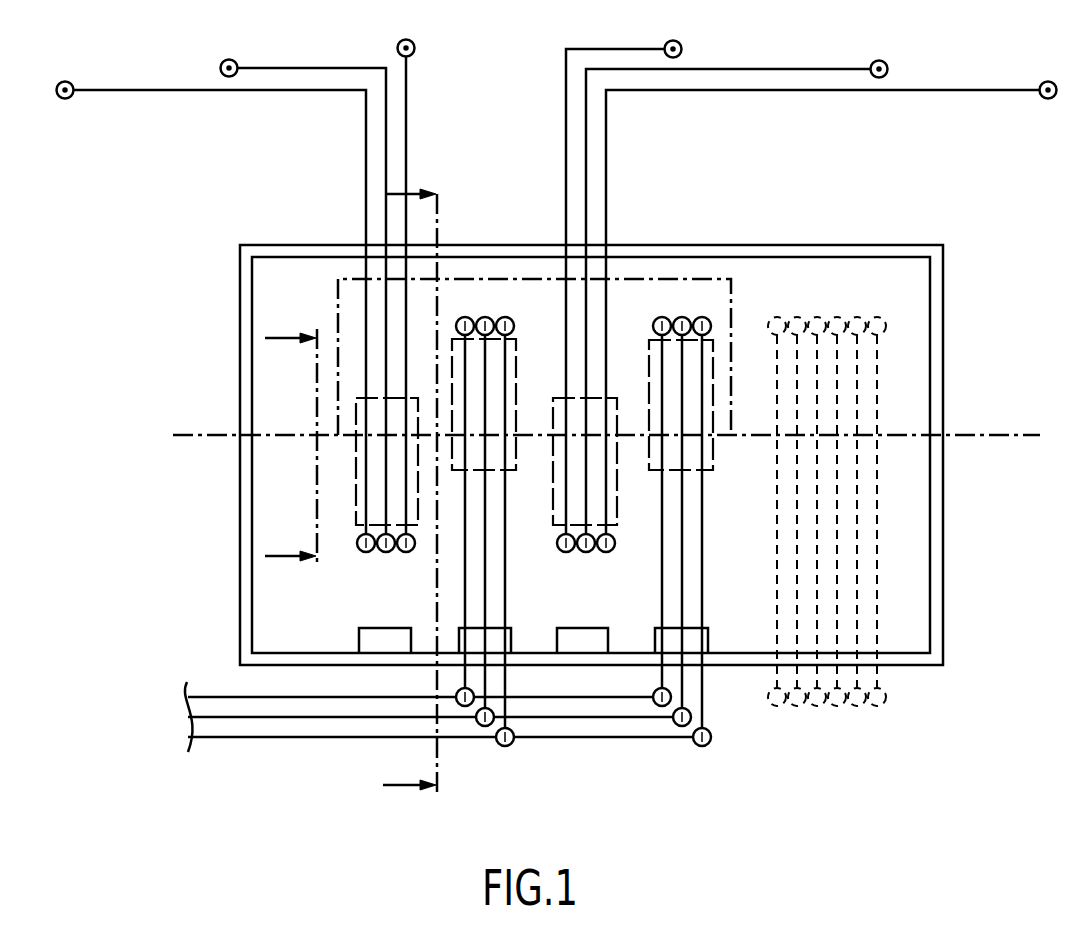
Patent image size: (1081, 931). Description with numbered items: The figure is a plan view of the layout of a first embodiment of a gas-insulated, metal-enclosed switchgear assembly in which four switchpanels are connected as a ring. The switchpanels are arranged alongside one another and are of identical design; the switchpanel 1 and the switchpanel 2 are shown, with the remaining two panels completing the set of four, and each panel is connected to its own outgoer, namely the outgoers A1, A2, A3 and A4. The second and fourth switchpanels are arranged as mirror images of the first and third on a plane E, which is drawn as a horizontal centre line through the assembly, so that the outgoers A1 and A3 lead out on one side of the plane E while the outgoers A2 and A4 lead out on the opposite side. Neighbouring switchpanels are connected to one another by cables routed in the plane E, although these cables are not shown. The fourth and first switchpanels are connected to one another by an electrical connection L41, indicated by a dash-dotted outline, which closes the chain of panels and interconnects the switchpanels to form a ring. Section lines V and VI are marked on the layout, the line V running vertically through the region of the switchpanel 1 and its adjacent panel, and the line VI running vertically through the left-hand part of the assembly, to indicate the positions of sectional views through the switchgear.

The switchpanel 1 is at (373, 485).
The switchpanel 2 is at (510, 376).
The electrical connection L41 is at (676, 279).
The outgoer A1 is at (236, 275).
The outgoer A2 is at (439, 565).
The outgoer A3 is at (811, 275).
The outgoer A4 is at (682, 565).
The plane E is at (622, 436).
The section line V is at (410, 496).
The section line VI is at (291, 450).